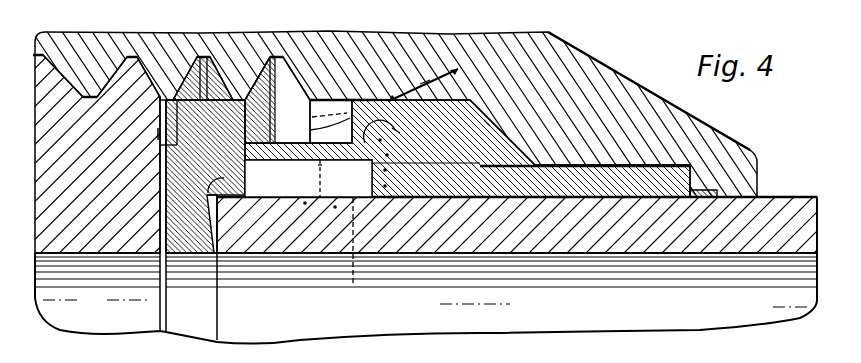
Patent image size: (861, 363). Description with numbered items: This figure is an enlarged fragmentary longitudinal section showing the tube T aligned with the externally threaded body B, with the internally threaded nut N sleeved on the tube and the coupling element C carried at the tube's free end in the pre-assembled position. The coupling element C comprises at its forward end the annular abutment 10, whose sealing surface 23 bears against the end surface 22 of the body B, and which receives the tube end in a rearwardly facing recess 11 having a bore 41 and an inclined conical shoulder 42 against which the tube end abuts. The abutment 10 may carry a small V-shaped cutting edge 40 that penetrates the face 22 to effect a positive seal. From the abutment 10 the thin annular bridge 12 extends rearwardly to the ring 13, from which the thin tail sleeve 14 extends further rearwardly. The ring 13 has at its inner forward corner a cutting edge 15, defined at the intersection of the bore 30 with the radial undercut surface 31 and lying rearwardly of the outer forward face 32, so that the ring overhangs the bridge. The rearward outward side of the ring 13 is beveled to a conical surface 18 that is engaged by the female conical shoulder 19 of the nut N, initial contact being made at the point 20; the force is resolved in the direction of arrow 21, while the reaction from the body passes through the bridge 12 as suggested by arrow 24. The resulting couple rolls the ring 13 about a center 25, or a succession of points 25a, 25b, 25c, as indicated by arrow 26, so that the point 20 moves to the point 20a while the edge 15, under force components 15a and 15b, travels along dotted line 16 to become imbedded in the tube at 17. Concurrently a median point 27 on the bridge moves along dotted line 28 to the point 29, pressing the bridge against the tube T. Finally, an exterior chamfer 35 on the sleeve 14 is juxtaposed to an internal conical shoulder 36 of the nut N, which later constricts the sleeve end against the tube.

The nut N is at (560, 70).
The body B is at (107, 223).
The coupling element C is at (182, 240).
The tube T is at (767, 230).
The abutment 10 is at (185, 108).
The recess 11 is at (200, 215).
The bridge part 12 is at (266, 55).
The ring part 13 is at (423, 88).
The tail sleeve 14 is at (623, 198).
The cutting edge 15 is at (393, 198).
The force component arrow 15a is at (350, 100).
The force component arrow 15b is at (404, 198).
The dotted line 16 is at (335, 207).
The point of embedment 17 is at (305, 203).
The conical surface 18 is at (393, 135).
The conical shoulder 19 is at (487, 123).
The contact point 20 is at (384, 99).
The displaced contact point 20a is at (310, 117).
The force arrow 21 is at (425, 82).
The end surface 22 is at (158, 134).
The sealing surface 23 is at (174, 119).
The reaction arrow 24 is at (295, 158).
The center point 25 is at (380, 140).
The rolling point 25a is at (387, 155).
The rolling point 25b is at (385, 170).
The rolling point 25c is at (437, 182).
The rolling arrow 26 is at (398, 131).
The median point 27 is at (320, 170).
The dotted line 28 is at (318, 187).
The displaced median point 29 is at (260, 200).
The bore 30 is at (562, 198).
The radial undercut surface 31 is at (385, 186).
The outer forward face 32 is at (313, 131).
The exterior conical chamfer 35 is at (670, 198).
The internal conical shoulder 36 is at (697, 173).
The V-shaped cutting edge 40 is at (161, 152).
The bore 41 is at (218, 178).
The conical shoulder 42 is at (205, 247).